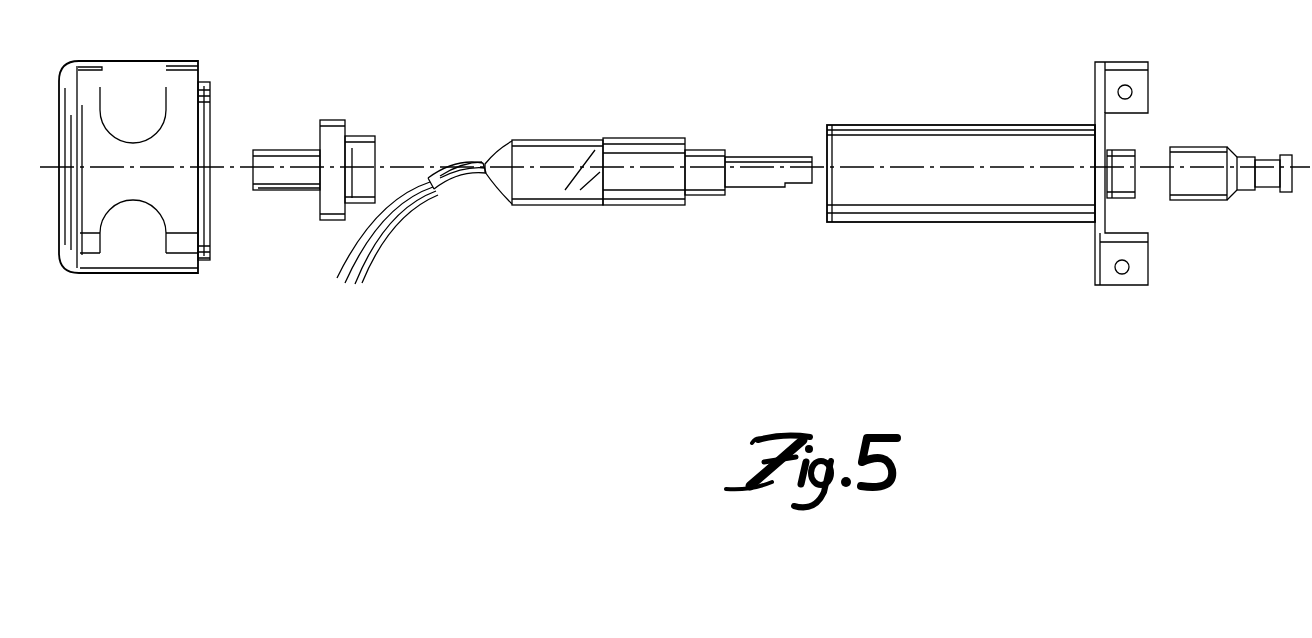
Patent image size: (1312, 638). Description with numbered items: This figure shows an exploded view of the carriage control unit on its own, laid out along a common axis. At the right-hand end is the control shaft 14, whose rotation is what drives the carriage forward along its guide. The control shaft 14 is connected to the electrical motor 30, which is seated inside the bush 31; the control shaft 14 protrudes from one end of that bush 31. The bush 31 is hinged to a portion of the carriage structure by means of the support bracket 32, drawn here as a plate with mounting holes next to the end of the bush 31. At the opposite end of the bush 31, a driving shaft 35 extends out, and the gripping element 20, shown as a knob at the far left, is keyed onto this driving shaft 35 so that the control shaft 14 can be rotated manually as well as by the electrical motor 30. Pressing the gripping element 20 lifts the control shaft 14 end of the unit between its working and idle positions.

The control shaft 14 is at (1205, 147).
The gripping element 20 is at (137, 273).
The electrical motor 30 is at (637, 205).
The bush 31 is at (927, 125).
The support bracket 32 is at (1132, 285).
The driving shaft 35 is at (288, 150).